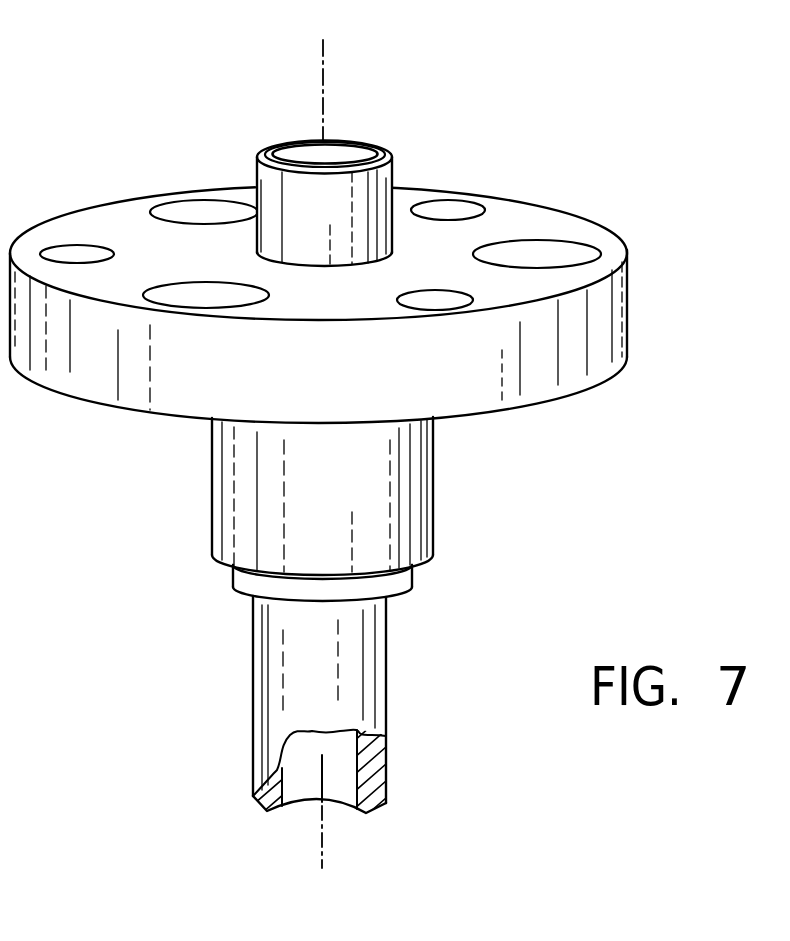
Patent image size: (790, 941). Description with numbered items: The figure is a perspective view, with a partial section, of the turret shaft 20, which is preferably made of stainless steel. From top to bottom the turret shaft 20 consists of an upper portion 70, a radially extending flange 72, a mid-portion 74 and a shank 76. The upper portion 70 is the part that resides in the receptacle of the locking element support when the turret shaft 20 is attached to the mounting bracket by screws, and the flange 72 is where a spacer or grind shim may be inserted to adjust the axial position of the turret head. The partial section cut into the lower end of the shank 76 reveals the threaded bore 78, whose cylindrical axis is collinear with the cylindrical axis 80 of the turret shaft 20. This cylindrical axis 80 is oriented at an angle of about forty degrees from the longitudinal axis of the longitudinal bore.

The turret shaft 20 is at (118, 541).
The upper portion 70 is at (392, 186).
The radially extending flange 72 is at (537, 385).
The mid-portion 74 is at (433, 487).
The shank 76 is at (386, 672).
The threaded bore 78 is at (296, 793).
The cylindrical axis 80 is at (323, 853).